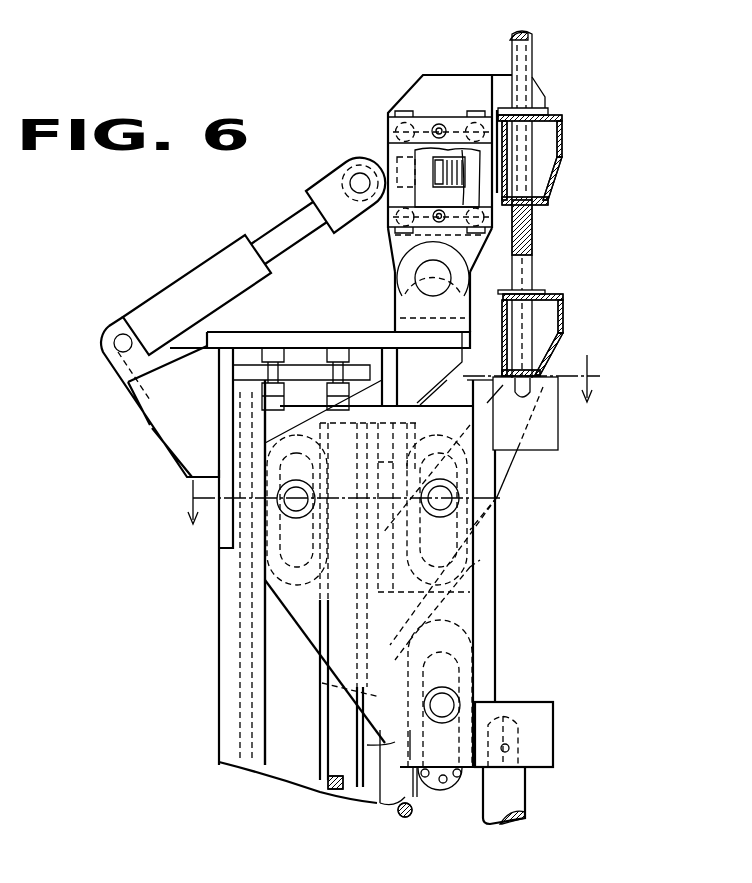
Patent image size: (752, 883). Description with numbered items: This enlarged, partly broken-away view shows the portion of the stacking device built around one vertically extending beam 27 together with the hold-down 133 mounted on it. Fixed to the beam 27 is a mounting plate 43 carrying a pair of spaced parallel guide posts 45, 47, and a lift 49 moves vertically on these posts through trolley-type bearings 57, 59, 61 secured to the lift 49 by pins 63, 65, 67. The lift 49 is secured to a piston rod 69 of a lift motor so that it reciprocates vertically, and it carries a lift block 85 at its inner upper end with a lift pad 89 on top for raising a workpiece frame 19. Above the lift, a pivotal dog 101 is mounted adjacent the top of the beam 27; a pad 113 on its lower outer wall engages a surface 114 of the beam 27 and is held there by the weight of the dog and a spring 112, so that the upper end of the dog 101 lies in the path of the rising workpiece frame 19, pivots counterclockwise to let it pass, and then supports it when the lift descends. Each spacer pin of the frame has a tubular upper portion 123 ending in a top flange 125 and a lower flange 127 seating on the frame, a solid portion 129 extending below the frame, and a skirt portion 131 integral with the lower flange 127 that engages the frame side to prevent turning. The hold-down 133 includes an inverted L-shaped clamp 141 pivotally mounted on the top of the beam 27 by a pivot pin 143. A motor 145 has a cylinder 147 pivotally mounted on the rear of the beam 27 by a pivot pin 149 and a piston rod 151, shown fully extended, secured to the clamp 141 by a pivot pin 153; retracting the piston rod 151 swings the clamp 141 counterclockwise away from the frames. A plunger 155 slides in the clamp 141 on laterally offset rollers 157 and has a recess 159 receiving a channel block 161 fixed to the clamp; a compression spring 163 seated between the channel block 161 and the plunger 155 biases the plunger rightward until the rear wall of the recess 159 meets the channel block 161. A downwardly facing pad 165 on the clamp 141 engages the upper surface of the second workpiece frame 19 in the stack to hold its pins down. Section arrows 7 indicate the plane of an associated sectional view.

The section line 7- 7 is at (382, 440).
The workpiece frame 19 is at (562, 120).
The beam 27 is at (290, 760).
The mounting plate 43 is at (313, 713).
The guide post 45 is at (322, 793).
The guide post 47 is at (400, 808).
The lift 49 is at (300, 628).
The trolley-type bearing 57 is at (330, 590).
The trolley-type bearing 59 is at (503, 572).
The trolley-type bearing 61 is at (505, 636).
The pin 63 is at (293, 512).
The pin 65 is at (448, 512).
The pin 67 is at (457, 703).
The piston rod 69 is at (527, 798).
The lift block 85 is at (557, 440).
The lift pad 89 is at (568, 385).
The dog 101 is at (498, 490).
The spring 112 is at (495, 602).
The pad 113 is at (322, 683).
The surface 114 is at (367, 745).
The tubular upper portion 123 is at (533, 48).
The top flange 125 is at (550, 203).
The lower flange 127 is at (548, 293).
The solid portion 129 is at (530, 157).
The skirt portion 131 is at (500, 315).
The hold-down 133 is at (372, 98).
The clamp 141 is at (435, 75).
The pivot pin 143 is at (417, 287).
The motor 145 is at (187, 257).
The cylinder 147 is at (217, 252).
The pivot pin 149 is at (118, 340).
The piston rod 151 is at (280, 205).
The pivot pin 153 is at (360, 174).
The plunger 155 is at (517, 187).
The rollers 157 is at (403, 112).
The recess 159 is at (462, 150).
The channel block 161 is at (437, 177).
The compression spring 163 is at (443, 225).
The pad 165 is at (545, 116).